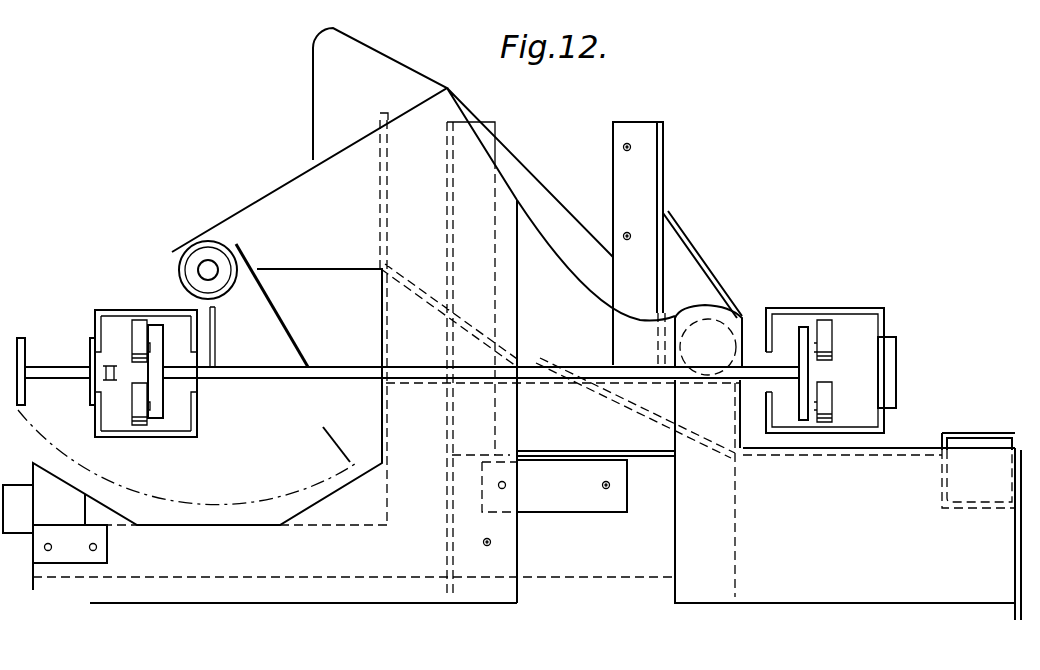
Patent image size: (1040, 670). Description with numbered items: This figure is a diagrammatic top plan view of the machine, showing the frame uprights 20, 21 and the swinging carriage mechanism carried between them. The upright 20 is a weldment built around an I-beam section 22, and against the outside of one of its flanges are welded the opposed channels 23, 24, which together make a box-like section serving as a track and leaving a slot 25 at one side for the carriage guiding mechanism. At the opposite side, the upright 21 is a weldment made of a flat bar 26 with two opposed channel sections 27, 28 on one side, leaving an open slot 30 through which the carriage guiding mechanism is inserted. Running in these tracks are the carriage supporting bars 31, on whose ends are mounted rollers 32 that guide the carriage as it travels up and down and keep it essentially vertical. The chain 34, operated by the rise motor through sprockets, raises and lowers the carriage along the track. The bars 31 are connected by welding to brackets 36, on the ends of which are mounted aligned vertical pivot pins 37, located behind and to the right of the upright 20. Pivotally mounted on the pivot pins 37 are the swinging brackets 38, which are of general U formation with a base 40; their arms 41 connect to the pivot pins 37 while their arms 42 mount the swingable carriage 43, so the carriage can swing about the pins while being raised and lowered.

The upright 20 is at (113, 312).
The upright 21 is at (820, 312).
The I-beam section 22 is at (22, 362).
The channel 23 is at (140, 314).
The channel 24 is at (172, 437).
The slot 25 is at (190, 355).
The flat bar 26 is at (893, 371).
The channel section 27 is at (882, 313).
The channel section 28 is at (880, 429).
The open slot 30 is at (775, 358).
The carriage supporting bar 31 is at (333, 372).
The roller 32 is at (138, 403).
The chain 34 is at (103, 375).
The bracket 36 is at (265, 325).
The pivot pin 37 is at (210, 268).
The swinging bracket 38 is at (423, 174).
The base 40 is at (402, 342).
The arm 41 is at (386, 355).
The arm 42 is at (188, 485).
The swingable carriage 43 is at (345, 603).